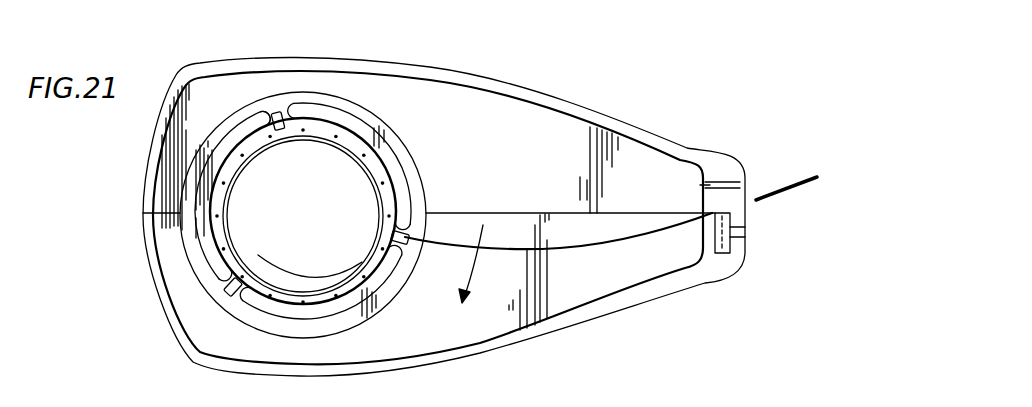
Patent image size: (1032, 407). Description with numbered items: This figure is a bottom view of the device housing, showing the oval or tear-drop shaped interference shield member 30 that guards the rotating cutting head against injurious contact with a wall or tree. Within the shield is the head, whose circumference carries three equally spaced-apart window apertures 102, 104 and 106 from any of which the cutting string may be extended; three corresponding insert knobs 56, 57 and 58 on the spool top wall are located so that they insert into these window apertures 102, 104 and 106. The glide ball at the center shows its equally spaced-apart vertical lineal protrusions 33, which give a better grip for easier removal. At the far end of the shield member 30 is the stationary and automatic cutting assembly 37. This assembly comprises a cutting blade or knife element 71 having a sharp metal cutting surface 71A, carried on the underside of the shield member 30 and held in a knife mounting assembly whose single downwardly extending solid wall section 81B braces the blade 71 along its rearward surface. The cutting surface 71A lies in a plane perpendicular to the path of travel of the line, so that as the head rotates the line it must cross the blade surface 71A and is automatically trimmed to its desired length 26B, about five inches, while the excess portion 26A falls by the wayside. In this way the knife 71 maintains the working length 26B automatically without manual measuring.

The interference shield member 30 is at (542, 93).
The vertical lineal protrusions 33 is at (330, 121).
The insert knob 56 is at (276, 112).
The insert knob 57 is at (213, 277).
The insert knob 58 is at (392, 250).
The window aperture 102 is at (265, 100).
The window aperture 104 is at (226, 296).
The window aperture 106 is at (447, 218).
The excess portion of line 26A is at (797, 177).
The desired length of line 26B is at (622, 242).
The cutting blade 71 is at (738, 218).
The cutting surface 71A is at (722, 208).
The wall section 81B is at (735, 247).
The cutting assembly 37 is at (727, 253).